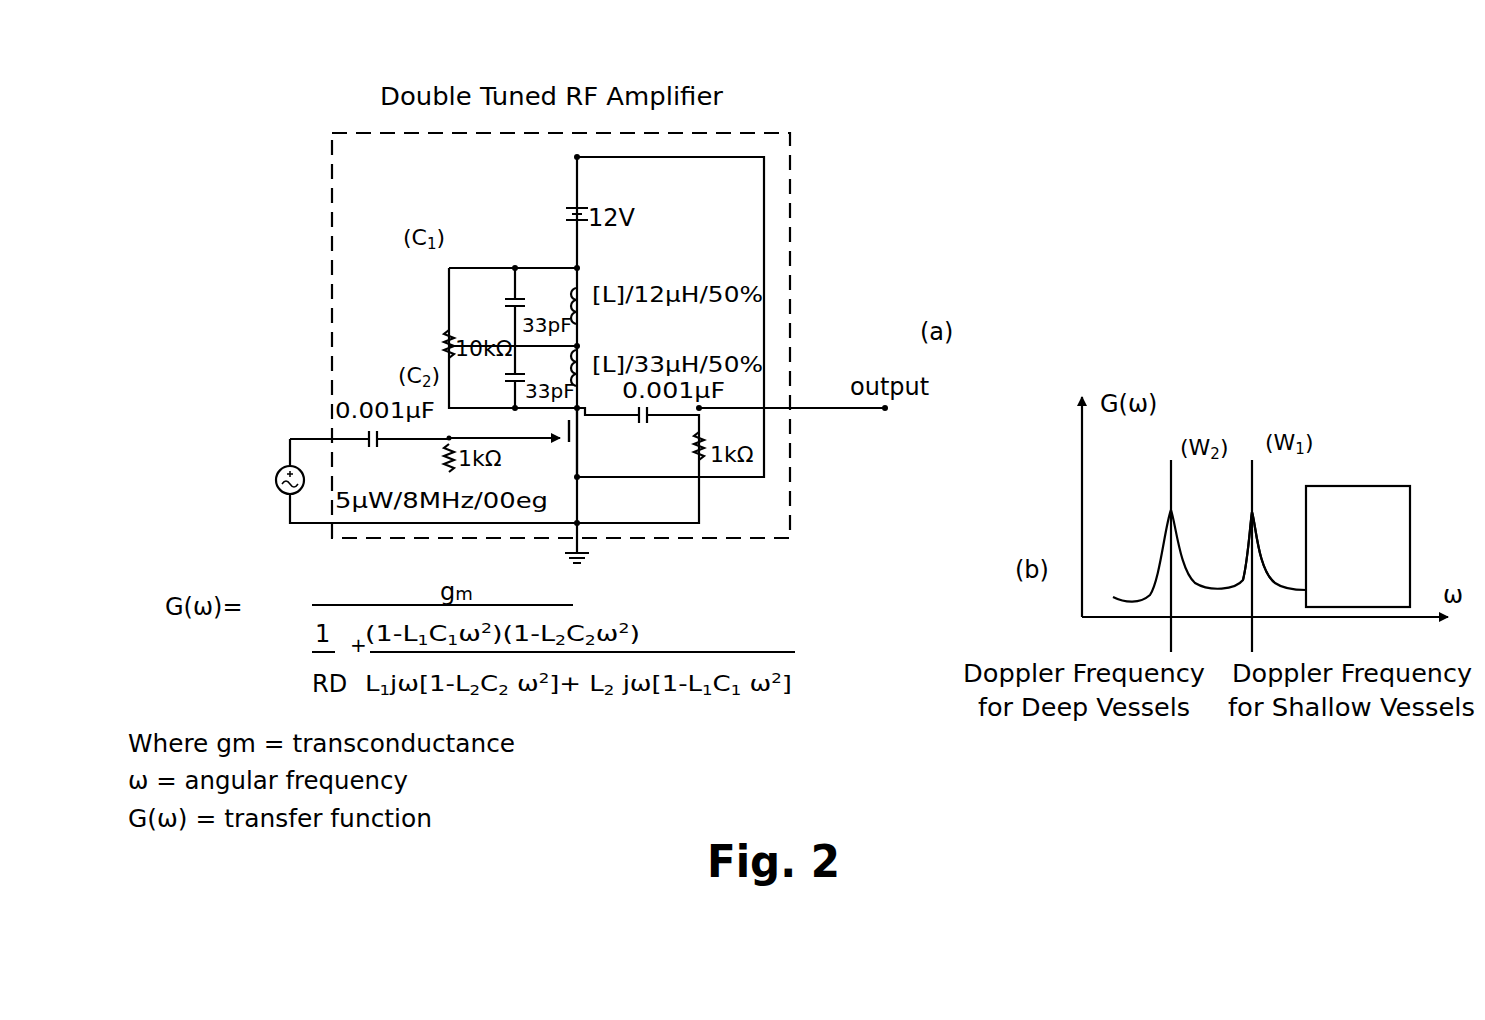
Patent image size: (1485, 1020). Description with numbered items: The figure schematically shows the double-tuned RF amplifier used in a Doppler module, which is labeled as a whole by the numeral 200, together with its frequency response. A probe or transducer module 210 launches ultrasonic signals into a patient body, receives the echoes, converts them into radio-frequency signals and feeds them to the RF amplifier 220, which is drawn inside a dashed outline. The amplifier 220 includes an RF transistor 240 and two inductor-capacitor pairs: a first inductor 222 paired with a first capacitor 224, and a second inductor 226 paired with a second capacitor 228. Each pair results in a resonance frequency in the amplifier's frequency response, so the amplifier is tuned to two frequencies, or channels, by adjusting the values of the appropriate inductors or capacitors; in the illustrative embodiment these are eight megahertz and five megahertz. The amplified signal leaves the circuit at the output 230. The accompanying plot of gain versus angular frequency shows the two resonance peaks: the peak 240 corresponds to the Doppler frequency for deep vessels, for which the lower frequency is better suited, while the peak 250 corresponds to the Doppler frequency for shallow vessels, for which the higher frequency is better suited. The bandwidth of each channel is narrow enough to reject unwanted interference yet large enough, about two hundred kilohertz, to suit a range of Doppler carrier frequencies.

The ultrasound Doppler receiver system 200 is at (262, 306).
The transducer module 210 is at (274, 477).
The RF amplifier 220 is at (790, 252).
The inductor L1 222 is at (574, 313).
The capacitor C1 224 is at (513, 298).
The inductor L2 226 is at (576, 380).
The capacitor C2 228 is at (512, 379).
The output 230 is at (858, 410).
The RF transistor 240 is at (583, 444).
The shallow vessel Doppler frequency peak 250 is at (1254, 520).